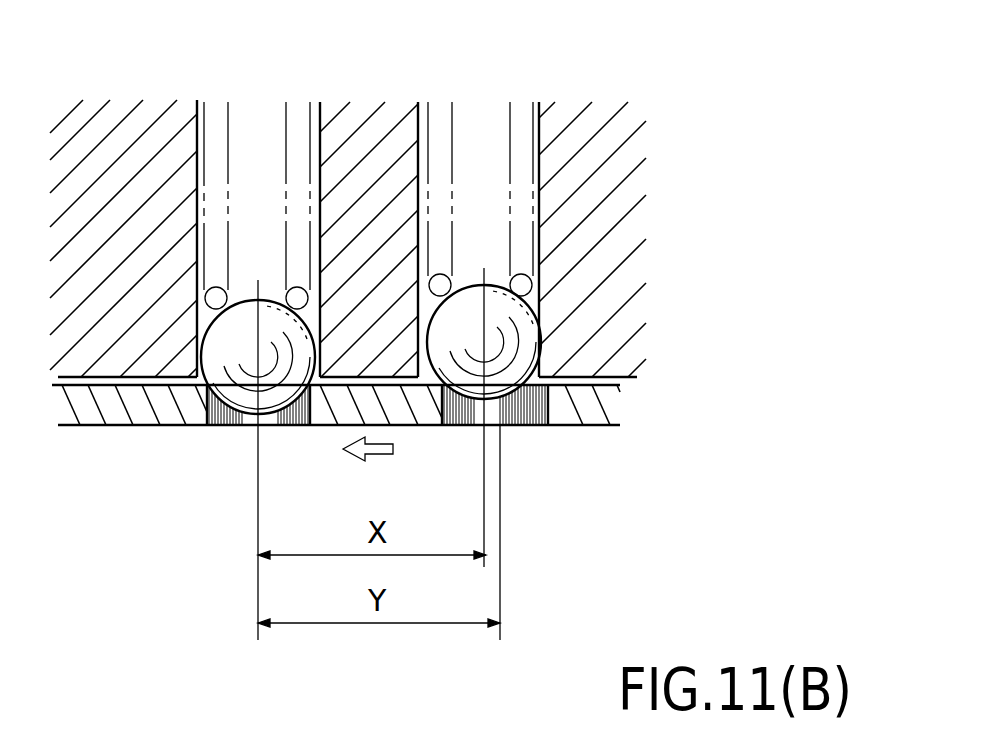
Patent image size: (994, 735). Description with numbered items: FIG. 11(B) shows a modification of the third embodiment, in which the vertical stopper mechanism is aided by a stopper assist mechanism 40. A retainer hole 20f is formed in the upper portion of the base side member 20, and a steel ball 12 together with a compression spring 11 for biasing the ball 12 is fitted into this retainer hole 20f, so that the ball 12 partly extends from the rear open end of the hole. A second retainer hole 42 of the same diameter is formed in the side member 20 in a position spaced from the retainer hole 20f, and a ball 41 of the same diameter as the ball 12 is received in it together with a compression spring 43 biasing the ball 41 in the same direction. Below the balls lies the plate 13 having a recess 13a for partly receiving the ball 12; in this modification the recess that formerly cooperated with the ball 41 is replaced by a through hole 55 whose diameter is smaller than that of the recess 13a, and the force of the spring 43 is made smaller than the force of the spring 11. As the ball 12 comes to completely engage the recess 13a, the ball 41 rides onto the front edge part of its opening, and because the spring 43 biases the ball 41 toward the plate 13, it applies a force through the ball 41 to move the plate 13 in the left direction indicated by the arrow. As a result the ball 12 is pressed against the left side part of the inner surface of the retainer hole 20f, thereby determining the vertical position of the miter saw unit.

The base side member 20 is at (113, 145).
The retainer hole 20f is at (205, 175).
The compression spring 11 is at (298, 148).
The stopper assist mechanism 40 is at (553, 241).
The retainer hole 42 is at (420, 195).
The compression spring 43 is at (520, 145).
The plate 13 is at (83, 408).
The recess 13a is at (225, 427).
The ball 12 is at (243, 427).
The ball 41 is at (523, 426).
The through hole 55 is at (543, 426).